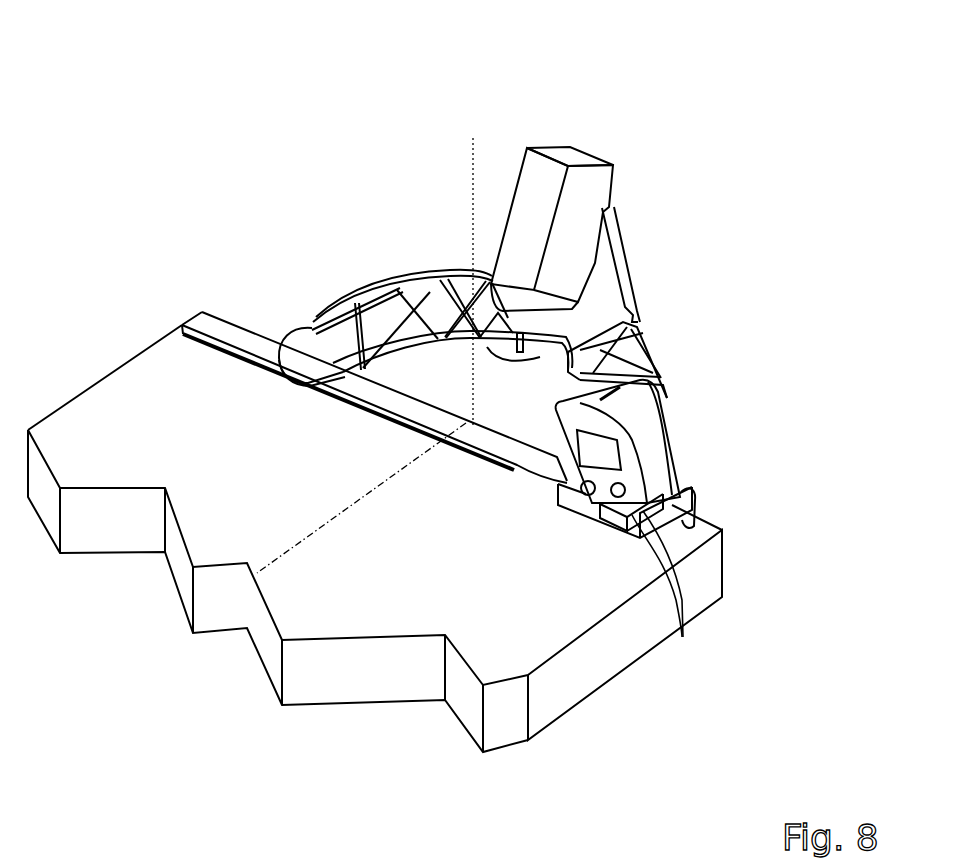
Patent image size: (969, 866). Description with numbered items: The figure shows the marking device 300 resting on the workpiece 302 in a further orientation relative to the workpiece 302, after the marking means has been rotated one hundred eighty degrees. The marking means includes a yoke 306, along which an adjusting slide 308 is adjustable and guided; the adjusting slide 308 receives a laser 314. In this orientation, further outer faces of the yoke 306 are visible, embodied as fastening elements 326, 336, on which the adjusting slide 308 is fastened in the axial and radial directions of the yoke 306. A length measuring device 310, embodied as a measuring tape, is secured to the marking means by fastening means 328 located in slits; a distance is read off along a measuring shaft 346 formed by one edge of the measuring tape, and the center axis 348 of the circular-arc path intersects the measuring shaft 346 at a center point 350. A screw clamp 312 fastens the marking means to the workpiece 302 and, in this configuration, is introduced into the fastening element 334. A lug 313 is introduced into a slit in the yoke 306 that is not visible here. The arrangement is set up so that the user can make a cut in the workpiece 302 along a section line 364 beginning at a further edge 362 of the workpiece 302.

The marking device 300 is at (410, 232).
The workpiece 302 is at (180, 390).
The yoke 306 is at (393, 343).
The adjusting slide 308 is at (610, 258).
The length measuring device 310 is at (655, 415).
The screw clamp 312 is at (721, 598).
The lug 313 is at (305, 360).
The laser 314 is at (573, 160).
The fastening element 326 is at (553, 343).
The fastening means 328 is at (683, 637).
The fastening element 334 is at (683, 480).
The fastening element 336 is at (640, 333).
The measuring shaft 346 is at (237, 323).
The center axis 348 is at (473, 182).
The center point 350 is at (445, 300).
The further edge 362 is at (713, 515).
The section line 364 is at (283, 553).